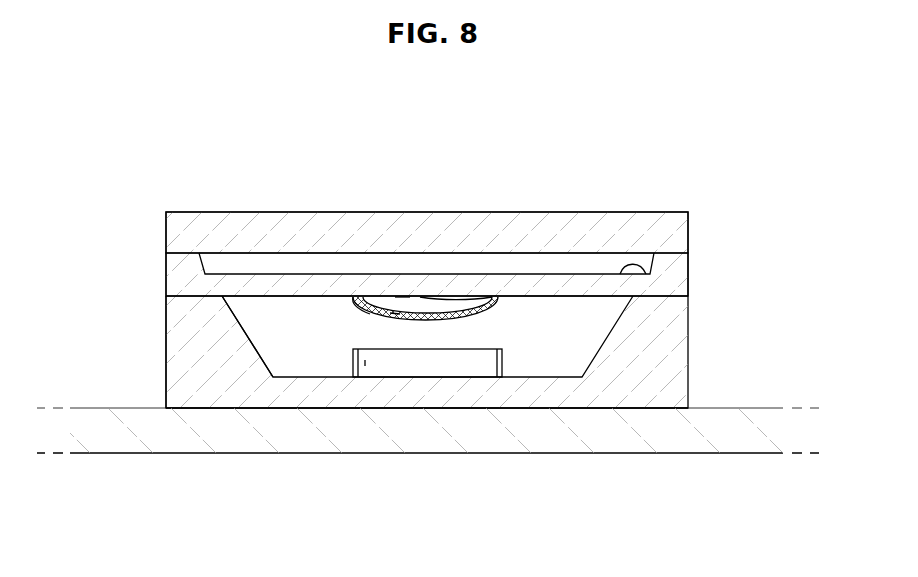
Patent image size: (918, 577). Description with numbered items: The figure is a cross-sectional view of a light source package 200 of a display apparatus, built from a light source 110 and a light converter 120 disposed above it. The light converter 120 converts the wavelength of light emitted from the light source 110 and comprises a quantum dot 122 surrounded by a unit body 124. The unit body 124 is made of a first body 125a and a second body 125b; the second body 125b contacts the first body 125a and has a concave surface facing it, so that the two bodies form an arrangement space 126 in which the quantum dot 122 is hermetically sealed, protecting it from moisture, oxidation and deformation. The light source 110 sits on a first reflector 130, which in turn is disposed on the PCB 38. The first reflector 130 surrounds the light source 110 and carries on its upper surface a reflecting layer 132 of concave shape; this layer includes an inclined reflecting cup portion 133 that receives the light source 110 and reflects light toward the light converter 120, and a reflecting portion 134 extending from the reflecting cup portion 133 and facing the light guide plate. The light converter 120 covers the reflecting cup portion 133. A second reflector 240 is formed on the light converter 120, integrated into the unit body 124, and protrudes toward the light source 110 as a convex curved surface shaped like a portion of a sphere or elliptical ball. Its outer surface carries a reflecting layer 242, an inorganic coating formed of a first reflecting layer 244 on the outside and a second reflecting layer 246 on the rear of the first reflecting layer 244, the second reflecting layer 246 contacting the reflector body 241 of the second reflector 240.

The light emitting device 200 is at (434, 344).
The light converter 120 is at (434, 344).
The unit body 124 is at (494, 238).
The first body 125a is at (678, 224).
The second body 125b is at (680, 279).
The quantum dot 122 is at (513, 258).
The arrangement space 126 is at (646, 274).
The first reflector 130 is at (412, 423).
The reflecting layer 132 is at (204, 423).
The reflecting cup portion 133 is at (242, 333).
The reflecting portion 134 is at (180, 286).
The light source 110 is at (430, 365).
The second reflector 240 is at (424, 319).
The reflector body 241 is at (455, 296).
The reflecting layer 242 is at (388, 318).
The first reflecting layer 244 is at (363, 316).
The second reflecting layer 246 is at (408, 297).
The PCB 38 is at (557, 440).